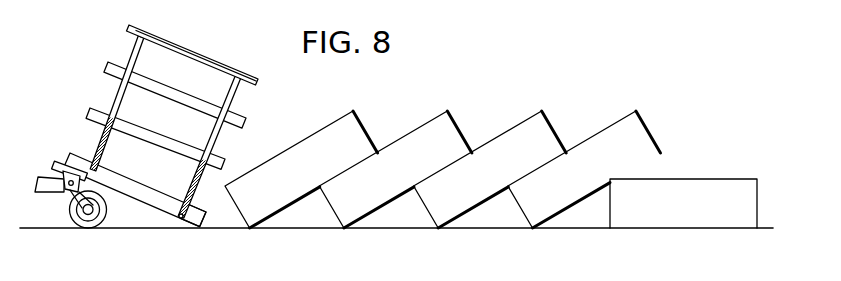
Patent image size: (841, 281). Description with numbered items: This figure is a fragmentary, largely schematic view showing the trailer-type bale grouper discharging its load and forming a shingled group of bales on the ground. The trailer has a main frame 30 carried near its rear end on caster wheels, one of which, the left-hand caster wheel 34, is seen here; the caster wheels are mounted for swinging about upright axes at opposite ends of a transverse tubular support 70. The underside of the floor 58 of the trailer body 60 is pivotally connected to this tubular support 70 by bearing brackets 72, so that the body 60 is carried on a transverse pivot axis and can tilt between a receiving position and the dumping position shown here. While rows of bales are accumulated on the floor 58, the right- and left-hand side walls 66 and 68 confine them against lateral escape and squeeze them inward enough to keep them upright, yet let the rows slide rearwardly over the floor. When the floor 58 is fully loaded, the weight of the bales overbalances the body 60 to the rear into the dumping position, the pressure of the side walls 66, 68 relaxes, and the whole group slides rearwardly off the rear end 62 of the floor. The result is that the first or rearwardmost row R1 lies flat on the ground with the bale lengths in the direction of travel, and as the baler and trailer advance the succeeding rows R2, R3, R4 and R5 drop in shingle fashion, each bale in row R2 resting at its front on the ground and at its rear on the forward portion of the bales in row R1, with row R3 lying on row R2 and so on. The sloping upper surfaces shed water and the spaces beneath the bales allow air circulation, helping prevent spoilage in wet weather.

The body 60 is at (128, 27).
The left-hand side wall 68 is at (197, 54).
The floor 58 is at (142, 191).
The rear end of the floor 62 is at (206, 226).
The bearing bracket 72 is at (55, 165).
The transverse tubular support 70 is at (68, 188).
The left-hand caster wheel 34 is at (89, 224).
The main frame 30 is at (45, 181).
The right-hand side wall 66 is at (396, 254).
The first transverse row of bales R1 is at (733, 183).
The second transverse row of bales R2 is at (636, 111).
The third transverse row of bales R3 is at (543, 112).
The fourth transverse row of bales R4 is at (443, 112).
The fifth transverse row of bales R5 is at (353, 112).